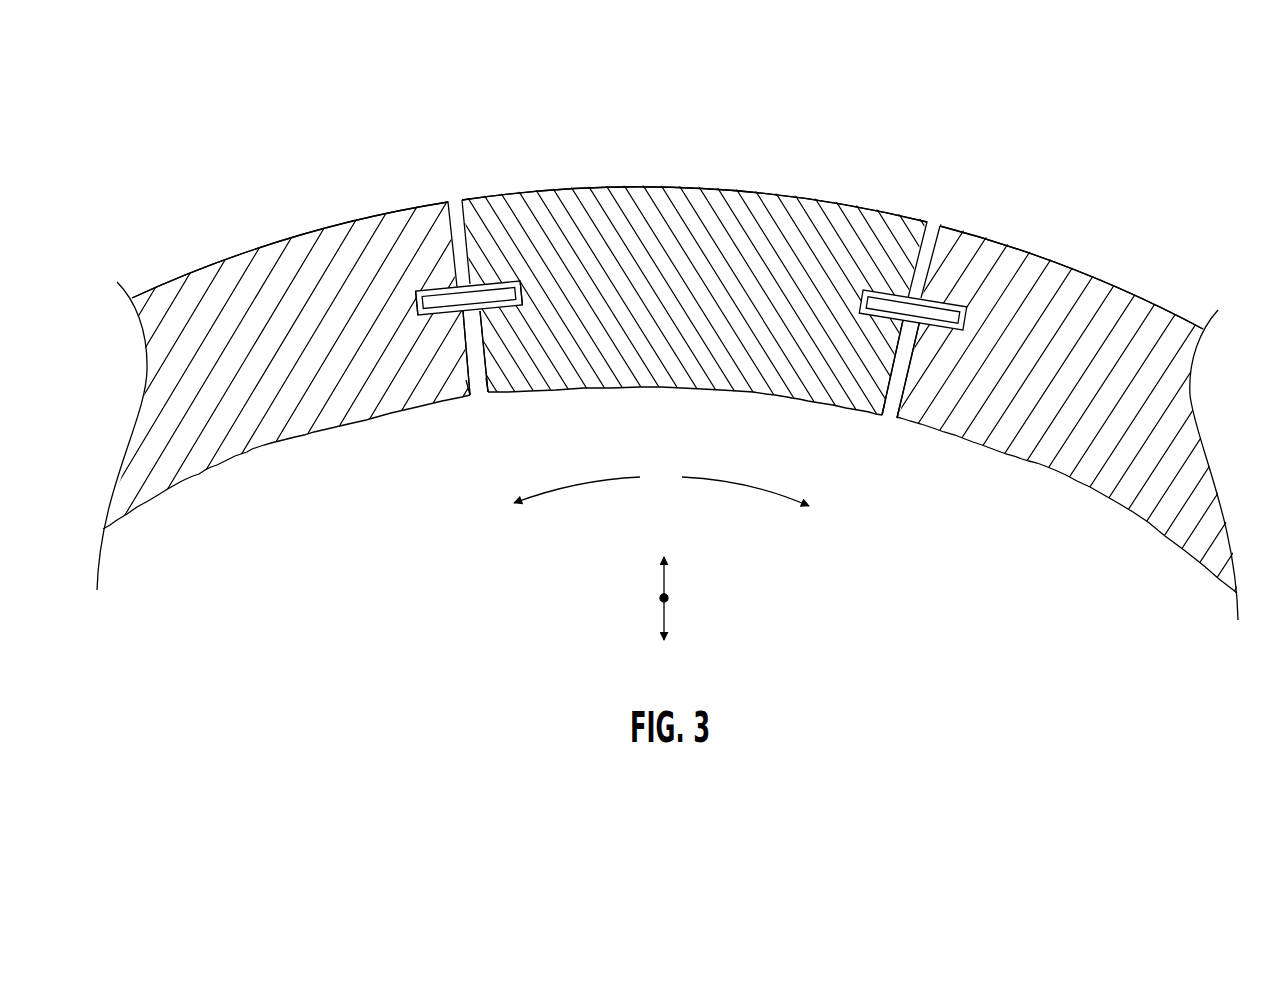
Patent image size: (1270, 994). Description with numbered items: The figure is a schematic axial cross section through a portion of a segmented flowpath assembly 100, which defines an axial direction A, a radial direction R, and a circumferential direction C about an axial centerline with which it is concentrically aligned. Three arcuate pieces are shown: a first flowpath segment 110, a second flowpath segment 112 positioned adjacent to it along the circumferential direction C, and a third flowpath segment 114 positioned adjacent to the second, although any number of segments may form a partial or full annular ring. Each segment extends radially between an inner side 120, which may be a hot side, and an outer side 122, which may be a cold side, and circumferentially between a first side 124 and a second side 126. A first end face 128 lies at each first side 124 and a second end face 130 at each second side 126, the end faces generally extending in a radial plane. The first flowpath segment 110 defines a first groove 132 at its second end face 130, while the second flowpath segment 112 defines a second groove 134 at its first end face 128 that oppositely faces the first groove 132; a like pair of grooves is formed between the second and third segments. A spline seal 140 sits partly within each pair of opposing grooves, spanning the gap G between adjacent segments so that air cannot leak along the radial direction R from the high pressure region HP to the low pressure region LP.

The segmented flowpath assembly 100 is at (391, 64).
The first flowpath segment 110 is at (213, 221).
The second flowpath segment 112 is at (722, 158).
The third flowpath segment 114 is at (1153, 243).
The inner side 120 is at (330, 431).
The outer side 122 is at (297, 231).
The first side 124 is at (489, 408).
The second side 126 is at (467, 408).
The first end face 128 is at (476, 337).
The second end face 130 is at (472, 362).
The first groove 132 is at (411, 303).
The second groove 134 is at (529, 290).
The spline seal 140 is at (863, 295).
The gap G is at (505, 223).
The high pressure region HP is at (587, 118).
The low pressure region LP is at (422, 591).
The circumferential direction C is at (661, 481).
The radial direction R is at (667, 577).
The axial direction A is at (660, 598).